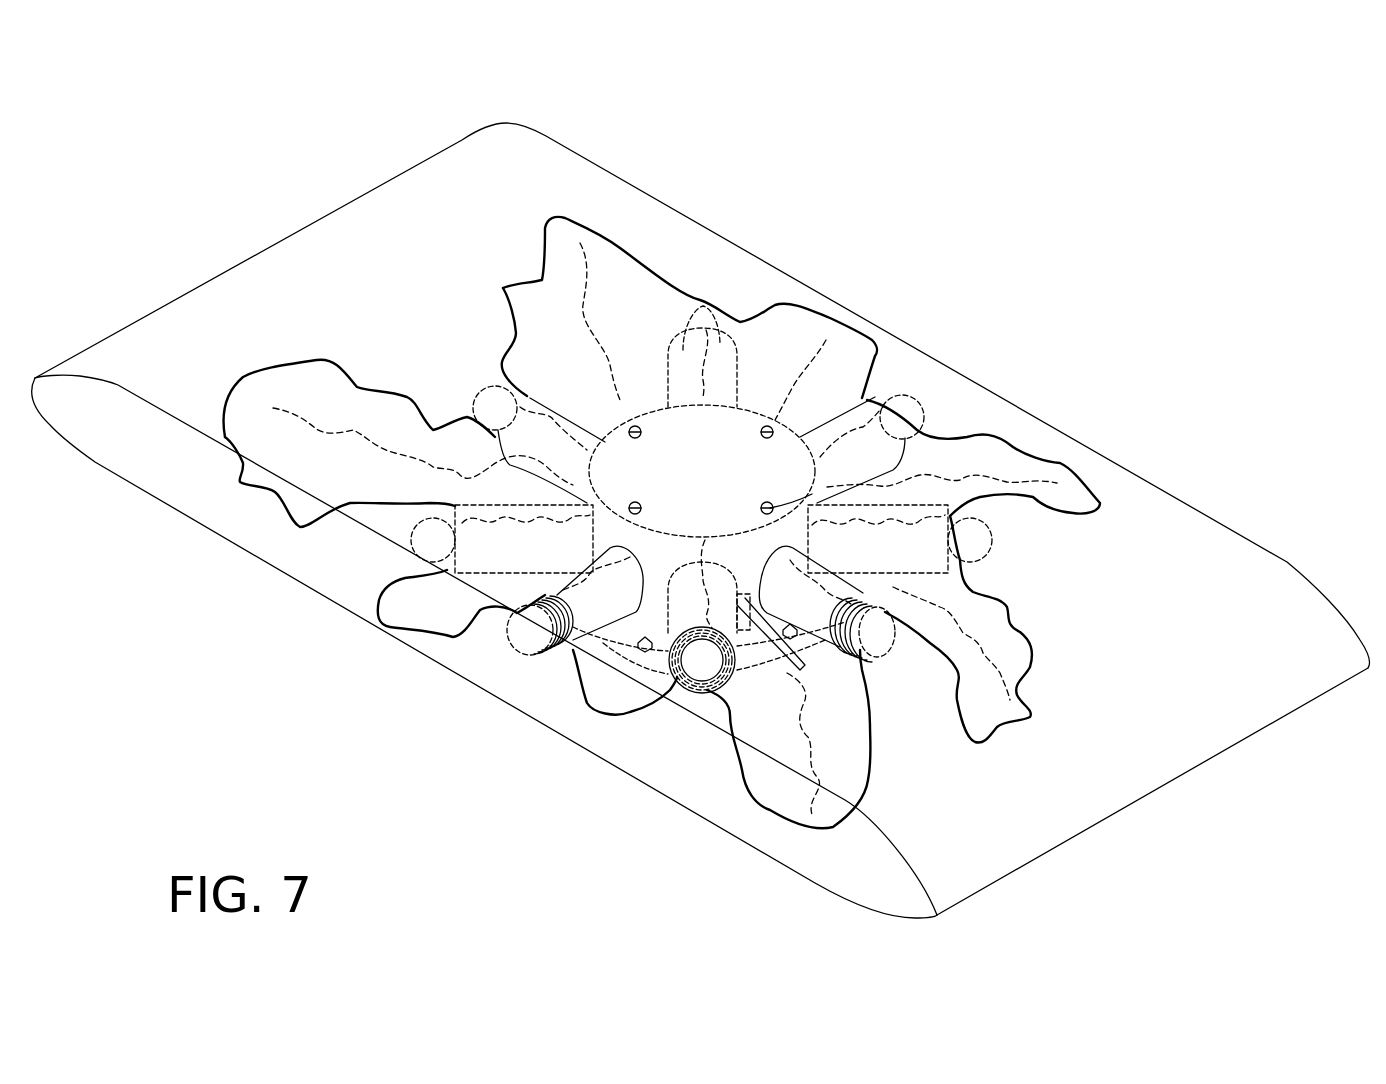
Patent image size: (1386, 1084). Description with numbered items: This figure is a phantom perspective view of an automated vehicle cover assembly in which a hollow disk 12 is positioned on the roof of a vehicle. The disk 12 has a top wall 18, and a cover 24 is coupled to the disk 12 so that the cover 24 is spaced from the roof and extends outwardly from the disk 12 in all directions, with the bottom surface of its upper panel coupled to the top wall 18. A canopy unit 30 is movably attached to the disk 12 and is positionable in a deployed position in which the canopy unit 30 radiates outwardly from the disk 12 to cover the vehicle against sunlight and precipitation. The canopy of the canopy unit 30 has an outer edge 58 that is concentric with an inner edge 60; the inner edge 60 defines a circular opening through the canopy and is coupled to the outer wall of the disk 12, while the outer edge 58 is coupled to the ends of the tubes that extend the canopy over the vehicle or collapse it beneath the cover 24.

The disk 12 is at (790, 468).
The top wall 18 is at (715, 455).
The cover 24 is at (118, 334).
The canopy unit 30 is at (1076, 721).
The outer edge 58 is at (503, 288).
The inner edge 60 is at (792, 508).